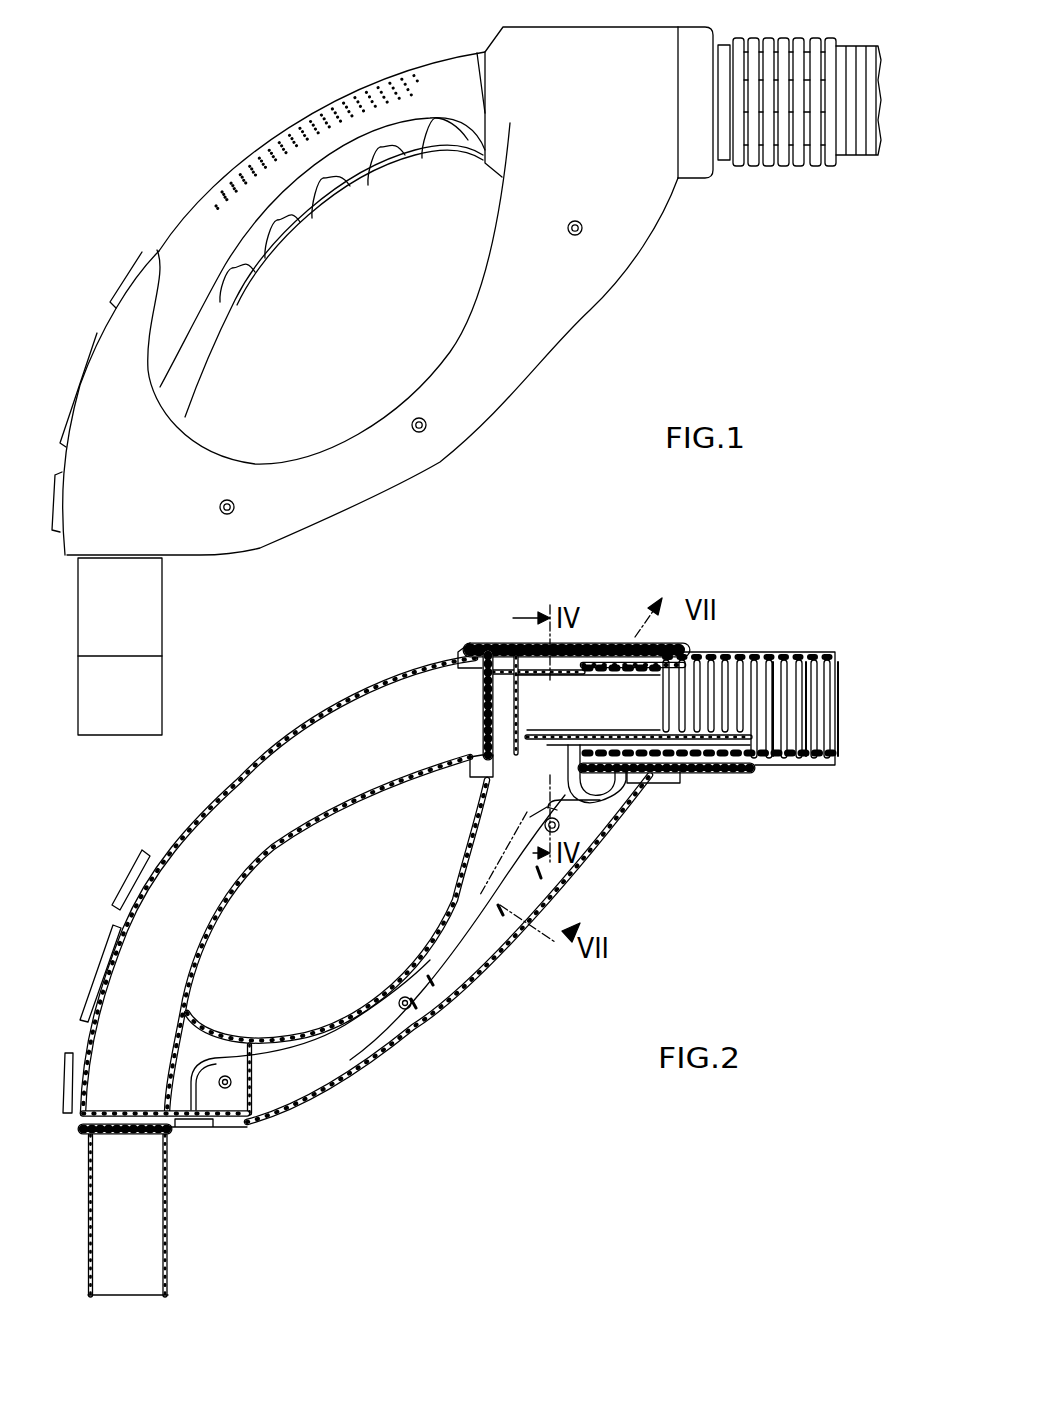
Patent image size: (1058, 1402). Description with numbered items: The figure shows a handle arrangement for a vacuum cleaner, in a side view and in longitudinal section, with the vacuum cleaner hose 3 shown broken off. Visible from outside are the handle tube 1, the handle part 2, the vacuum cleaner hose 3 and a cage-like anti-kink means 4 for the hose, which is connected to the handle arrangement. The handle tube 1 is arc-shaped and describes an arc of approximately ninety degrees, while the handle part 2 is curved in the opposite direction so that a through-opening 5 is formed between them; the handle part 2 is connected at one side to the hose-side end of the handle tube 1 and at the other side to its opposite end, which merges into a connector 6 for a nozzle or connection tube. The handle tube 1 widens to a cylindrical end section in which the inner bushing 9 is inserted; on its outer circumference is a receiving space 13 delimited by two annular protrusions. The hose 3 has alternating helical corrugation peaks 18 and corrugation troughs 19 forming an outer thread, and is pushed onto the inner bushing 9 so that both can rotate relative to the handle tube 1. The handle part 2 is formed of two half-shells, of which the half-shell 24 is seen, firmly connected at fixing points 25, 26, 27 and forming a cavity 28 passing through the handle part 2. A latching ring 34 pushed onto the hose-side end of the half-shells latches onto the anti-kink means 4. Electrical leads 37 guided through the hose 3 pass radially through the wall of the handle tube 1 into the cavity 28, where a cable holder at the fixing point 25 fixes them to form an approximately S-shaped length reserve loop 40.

In FIG. 1, the handle tube 1 is at (209, 210).
In FIG. 2, the handle tube 1 is at (318, 718).
In FIG. 1, the handle part 2 is at (528, 388).
In FIG. 2, the handle part 2 is at (370, 1066).
In FIG. 1, the vacuum cleaner hose 3 is at (855, 166).
In FIG. 2, the vacuum cleaner hose 3 is at (834, 680).
In FIG. 1, the anti-kink means 4 is at (751, 168).
In FIG. 2, the anti-kink means 4 is at (735, 770).
In FIG. 1, the through-opening 5 is at (332, 333).
In FIG. 2, the through-opening 5 is at (358, 907).
In FIG. 1, the connector 6 is at (150, 627).
In FIG. 2, the connector 6 is at (170, 1219).
In FIG. 2, the inner bushing 9 is at (636, 713).
In FIG. 2, the receiving space 13 is at (570, 657).
In FIG. 2, the corrugation peaks 18 is at (795, 657).
In FIG. 2, the corrugation troughs 19 is at (808, 657).
In FIG. 1, the half-shell 24 is at (528, 328).
In FIG. 2, the half-shell 24 is at (497, 968).
In FIG. 1, the fixing point 25 is at (582, 232).
In FIG. 2, the fixing point 25 is at (560, 829).
In FIG. 1, the fixing point 26 is at (420, 432).
In FIG. 2, the fixing point 26 is at (407, 1010).
In FIG. 1, the fixing point 27 is at (231, 513).
In FIG. 2, the fixing point 27 is at (228, 1090).
In FIG. 2, the cavity 28 is at (453, 990).
In FIG. 1, the latching ring 34 is at (698, 178).
In FIG. 2, the latching ring 34 is at (658, 782).
In FIG. 2, the electrical leads 37 is at (296, 1058).
In FIG. 2, the length reserve loop 40 is at (588, 790).